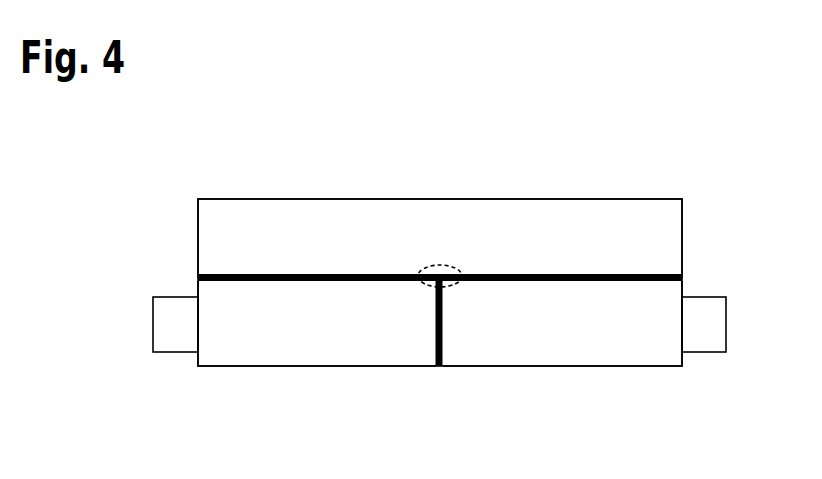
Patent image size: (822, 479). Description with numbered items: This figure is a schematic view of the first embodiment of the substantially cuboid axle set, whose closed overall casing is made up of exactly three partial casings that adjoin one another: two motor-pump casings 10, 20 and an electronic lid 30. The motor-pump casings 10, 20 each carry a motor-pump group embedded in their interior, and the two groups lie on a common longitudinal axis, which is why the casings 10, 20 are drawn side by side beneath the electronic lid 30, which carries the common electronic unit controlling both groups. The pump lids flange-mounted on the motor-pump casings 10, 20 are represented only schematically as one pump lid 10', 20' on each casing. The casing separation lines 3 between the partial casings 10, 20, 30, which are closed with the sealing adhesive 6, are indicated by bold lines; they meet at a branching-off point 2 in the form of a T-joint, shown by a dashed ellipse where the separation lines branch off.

The branching-off point 2 is at (450, 265).
The casing separation lines 3 is at (442, 325).
The sealing adhesive 6 is at (488, 418).
The motor-pump casing 10 is at (317, 367).
The pump lid 10' is at (174, 375).
The motor-pump casing 20 is at (562, 367).
The pump lid 20' is at (707, 375).
The electronic lid 30 is at (582, 218).